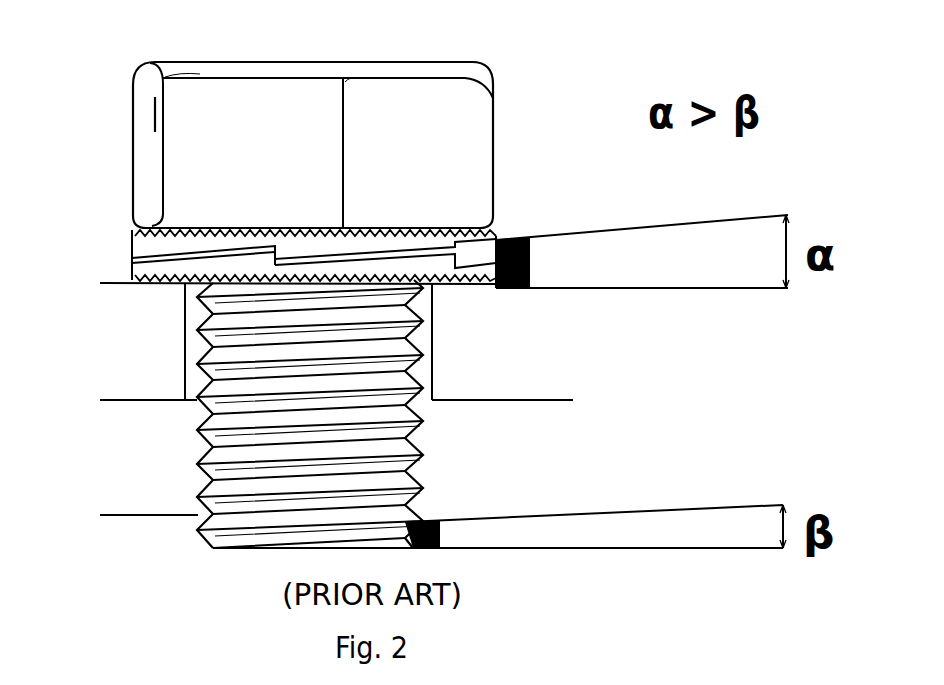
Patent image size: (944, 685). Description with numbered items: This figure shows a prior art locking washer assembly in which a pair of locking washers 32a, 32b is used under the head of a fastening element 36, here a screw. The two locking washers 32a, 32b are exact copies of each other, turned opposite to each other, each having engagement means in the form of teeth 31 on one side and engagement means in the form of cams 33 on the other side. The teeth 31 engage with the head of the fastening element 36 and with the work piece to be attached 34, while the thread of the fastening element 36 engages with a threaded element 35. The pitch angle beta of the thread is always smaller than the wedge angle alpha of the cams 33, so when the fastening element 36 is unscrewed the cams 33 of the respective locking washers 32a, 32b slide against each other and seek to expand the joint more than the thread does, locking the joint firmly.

The teeth 31 is at (158, 279).
The locking washer 32a is at (133, 233).
The locking washer 32b is at (132, 268).
The cams 33 is at (240, 247).
The work piece to be attached 34 is at (336, 341).
The threaded element 35 is at (443, 493).
The fastening element 36 is at (472, 127).